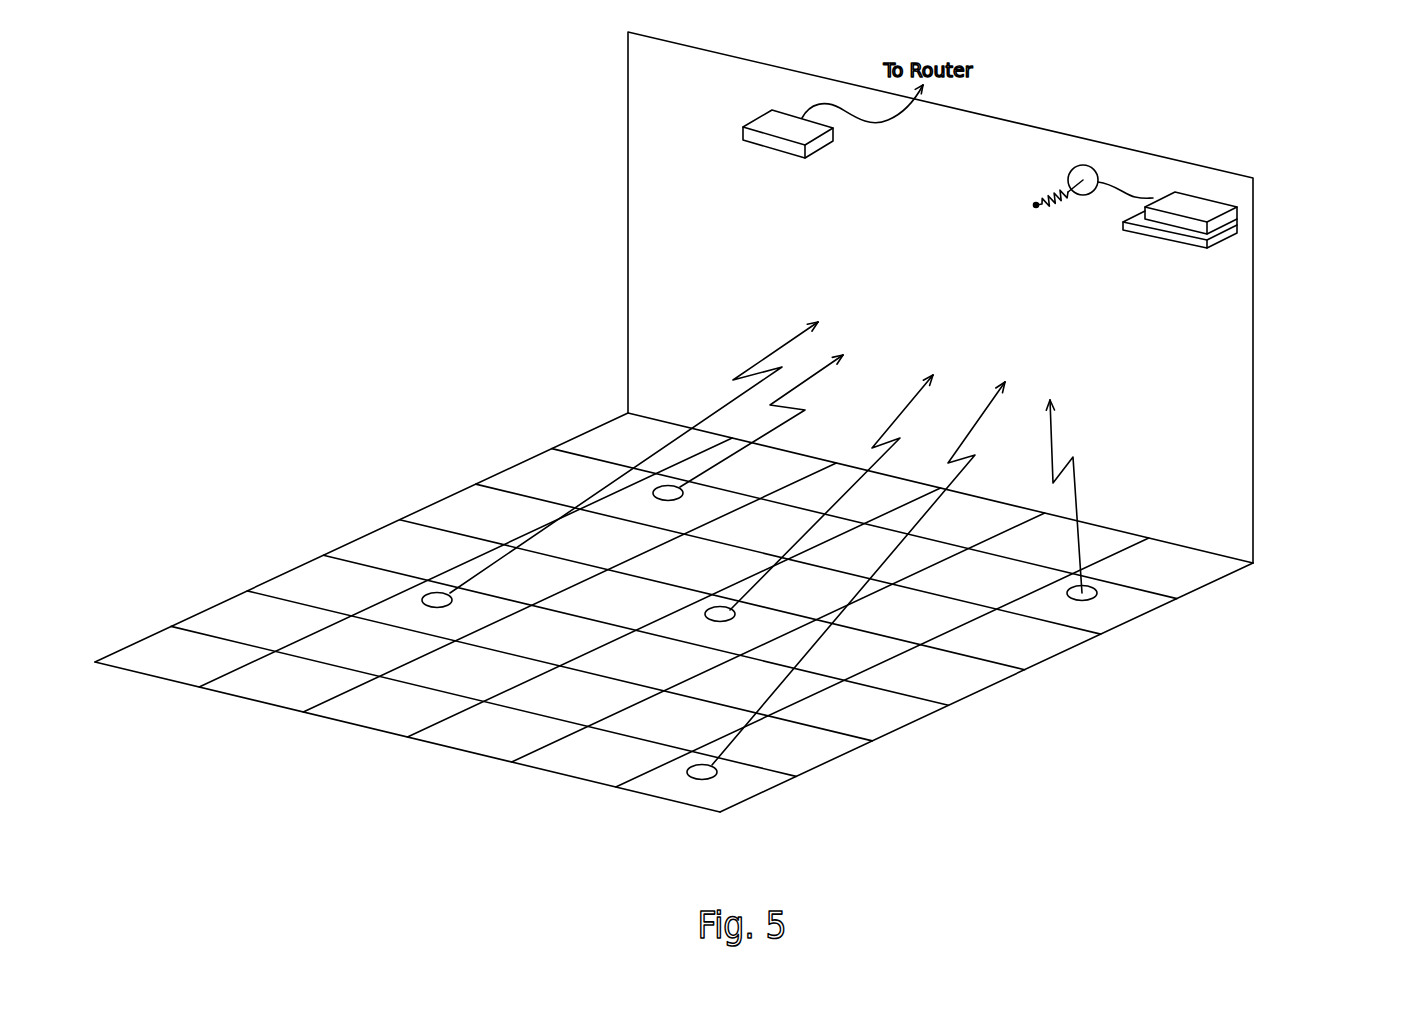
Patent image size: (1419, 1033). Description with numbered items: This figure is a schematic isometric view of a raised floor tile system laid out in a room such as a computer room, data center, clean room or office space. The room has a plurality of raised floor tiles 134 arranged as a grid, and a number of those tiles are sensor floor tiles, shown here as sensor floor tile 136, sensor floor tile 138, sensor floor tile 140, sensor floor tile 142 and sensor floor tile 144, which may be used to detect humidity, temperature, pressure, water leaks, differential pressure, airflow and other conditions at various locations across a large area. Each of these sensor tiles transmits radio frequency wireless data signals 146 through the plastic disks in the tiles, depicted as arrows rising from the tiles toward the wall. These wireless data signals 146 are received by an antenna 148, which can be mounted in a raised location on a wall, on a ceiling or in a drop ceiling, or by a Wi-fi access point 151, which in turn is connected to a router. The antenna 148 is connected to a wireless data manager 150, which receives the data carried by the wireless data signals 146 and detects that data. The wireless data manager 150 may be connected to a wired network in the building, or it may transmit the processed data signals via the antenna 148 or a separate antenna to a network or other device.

The raised floor tiles 134 is at (380, 517).
The sensor floor tile 136 is at (633, 500).
The sensor floor tile 138 is at (447, 622).
The sensor floor tile 140 is at (727, 635).
The sensor floor tile 142 is at (690, 786).
The sensor floor tile 144 is at (1107, 620).
The wireless data signals 146 is at (1160, 428).
The antenna 148 is at (1055, 175).
The wireless data manager 150 is at (1198, 205).
The Wi-fi access point 151 is at (775, 125).